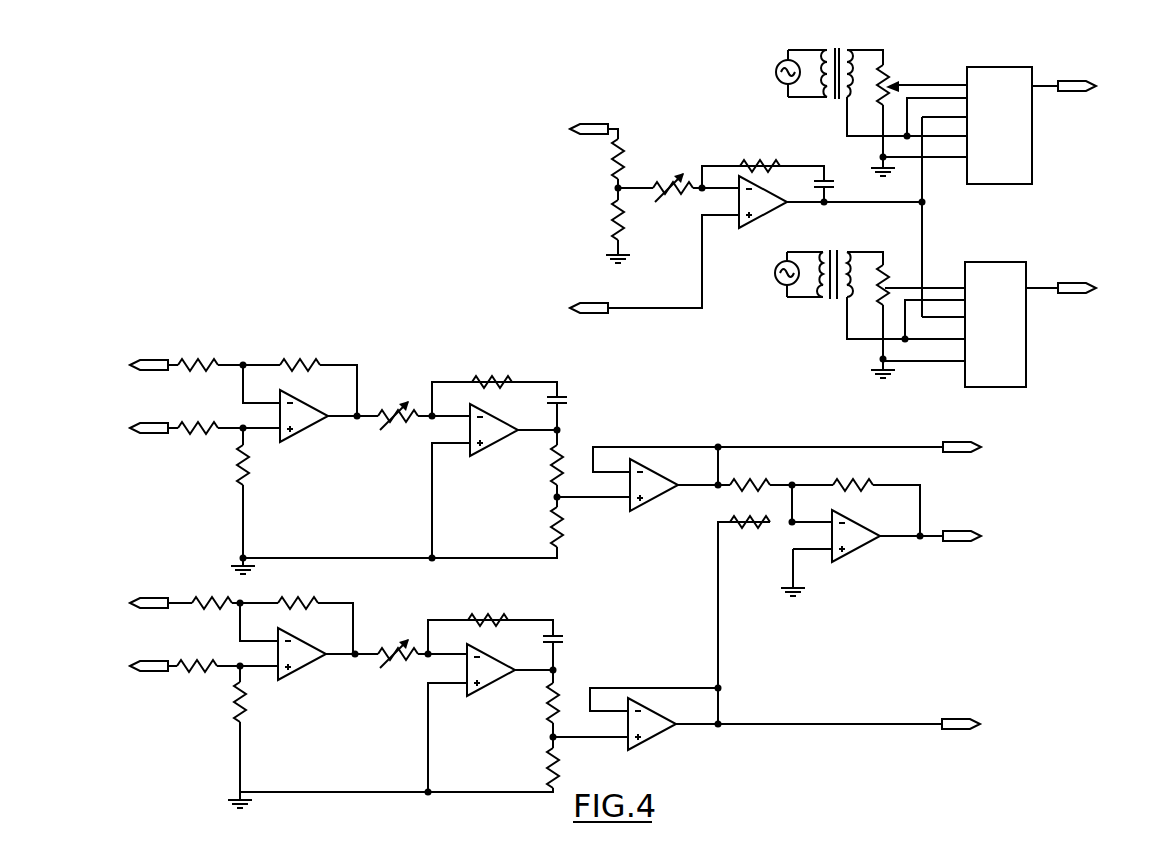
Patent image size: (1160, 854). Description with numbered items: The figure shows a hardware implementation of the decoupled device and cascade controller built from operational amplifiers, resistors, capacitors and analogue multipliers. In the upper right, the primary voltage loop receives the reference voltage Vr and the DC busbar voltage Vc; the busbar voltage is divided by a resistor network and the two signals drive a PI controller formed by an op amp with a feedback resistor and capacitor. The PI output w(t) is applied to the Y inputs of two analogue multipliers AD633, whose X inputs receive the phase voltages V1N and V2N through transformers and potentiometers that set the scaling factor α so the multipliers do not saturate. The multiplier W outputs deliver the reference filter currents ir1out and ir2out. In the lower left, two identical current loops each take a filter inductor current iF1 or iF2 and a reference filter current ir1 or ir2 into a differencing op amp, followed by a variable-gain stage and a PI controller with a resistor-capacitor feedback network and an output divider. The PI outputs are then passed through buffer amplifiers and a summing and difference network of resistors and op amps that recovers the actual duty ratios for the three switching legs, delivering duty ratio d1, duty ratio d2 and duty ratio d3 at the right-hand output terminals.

The filter inductor current iF1(t) iF1 is at (122, 366).
The reference filter current ir1(t) ir1 is at (122, 429).
The filter inductor current iF2(t) iF2 is at (121, 604).
The reference filter current ir2(t) ir2 is at (122, 667).
The DC busbar voltage vc(t) Vc is at (562, 130).
The reference voltage vr(t) Vr is at (562, 309).
The phase voltage v1N(t) V1N is at (755, 73).
The phase voltage v2N(t) V2N is at (756, 275).
The analogue multiplier AD633 is at (997, 241).
The reference filter current output ir1(t) ir1out is at (1086, 87).
The reference filter current output ir2(t) ir2out is at (1084, 289).
The duty ratio d1(t) d1 is at (986, 449).
The duty ratio d2(t) d2 is at (985, 724).
The duty ratio d3(t) d3 is at (986, 539).